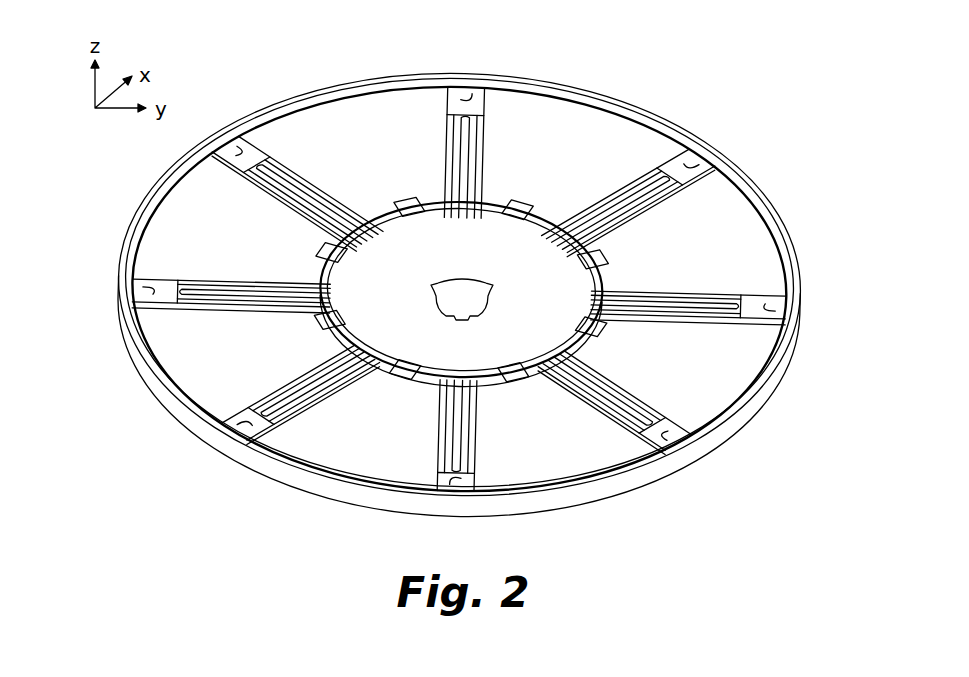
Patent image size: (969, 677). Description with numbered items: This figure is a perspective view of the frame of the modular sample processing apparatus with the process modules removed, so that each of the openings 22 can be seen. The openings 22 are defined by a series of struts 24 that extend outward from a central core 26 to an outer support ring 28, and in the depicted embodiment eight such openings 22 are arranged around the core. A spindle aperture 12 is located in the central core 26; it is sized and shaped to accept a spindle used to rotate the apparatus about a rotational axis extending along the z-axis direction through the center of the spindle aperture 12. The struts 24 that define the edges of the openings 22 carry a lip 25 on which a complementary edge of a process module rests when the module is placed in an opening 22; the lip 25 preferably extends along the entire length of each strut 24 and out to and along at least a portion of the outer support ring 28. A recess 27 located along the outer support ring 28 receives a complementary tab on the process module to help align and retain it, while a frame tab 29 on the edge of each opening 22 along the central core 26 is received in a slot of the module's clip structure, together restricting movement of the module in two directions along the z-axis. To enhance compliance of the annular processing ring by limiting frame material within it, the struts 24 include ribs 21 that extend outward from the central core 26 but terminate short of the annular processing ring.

The spindle aperture 12 is at (458, 282).
The rib 21 is at (233, 285).
The opening 22 is at (340, 188).
The strut 24 is at (455, 99).
The lip 25 is at (300, 172).
The central core 26 is at (454, 353).
The recess 27 is at (330, 105).
The outer support ring 28 is at (755, 194).
The frame tab 29 is at (350, 250).